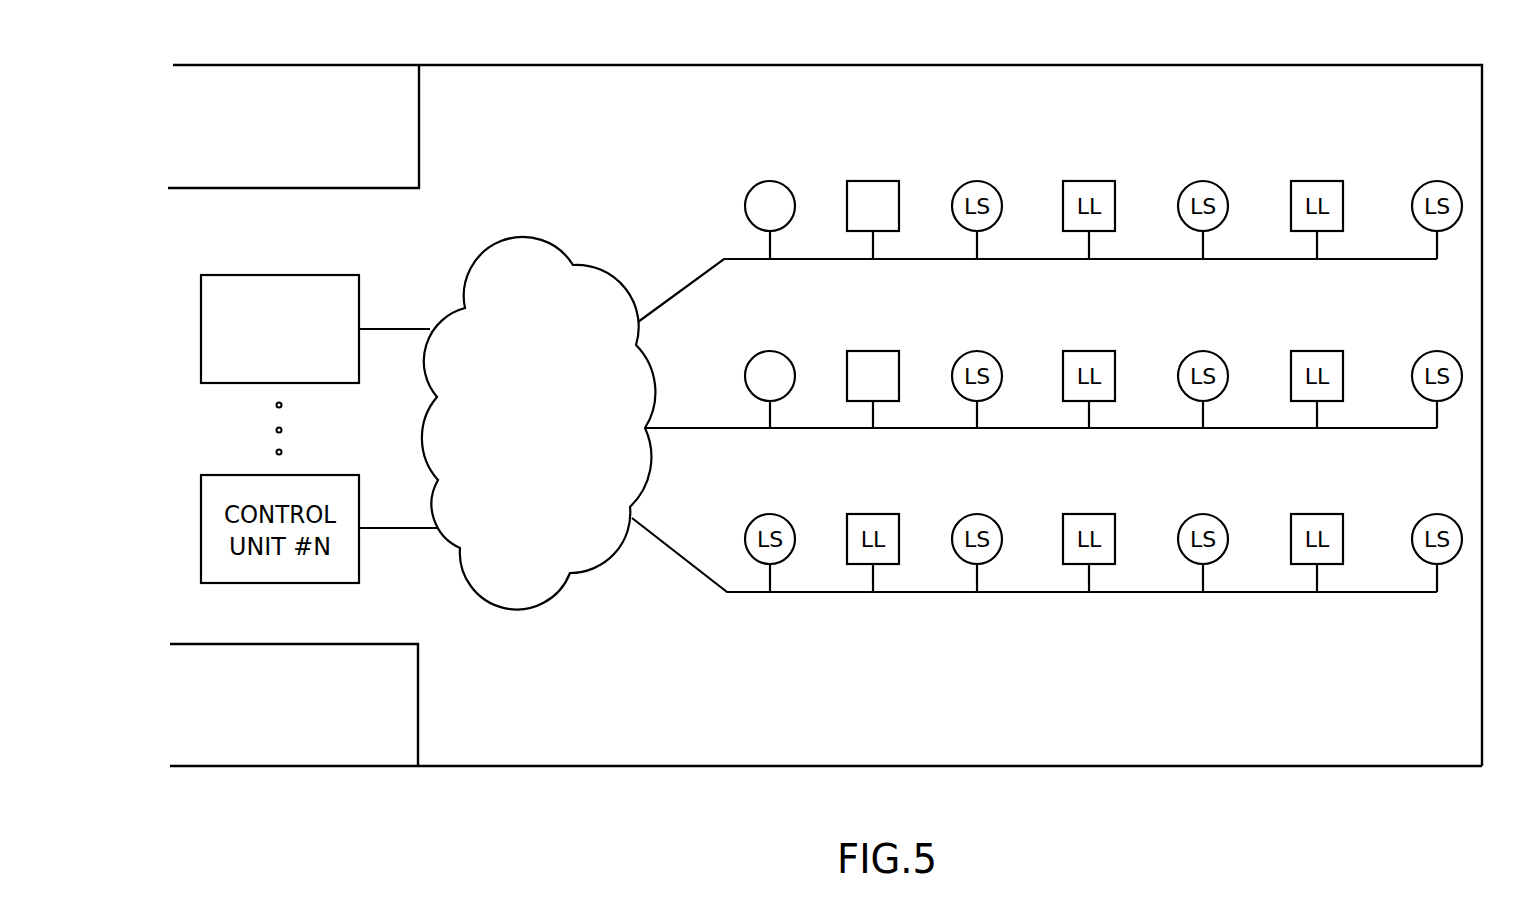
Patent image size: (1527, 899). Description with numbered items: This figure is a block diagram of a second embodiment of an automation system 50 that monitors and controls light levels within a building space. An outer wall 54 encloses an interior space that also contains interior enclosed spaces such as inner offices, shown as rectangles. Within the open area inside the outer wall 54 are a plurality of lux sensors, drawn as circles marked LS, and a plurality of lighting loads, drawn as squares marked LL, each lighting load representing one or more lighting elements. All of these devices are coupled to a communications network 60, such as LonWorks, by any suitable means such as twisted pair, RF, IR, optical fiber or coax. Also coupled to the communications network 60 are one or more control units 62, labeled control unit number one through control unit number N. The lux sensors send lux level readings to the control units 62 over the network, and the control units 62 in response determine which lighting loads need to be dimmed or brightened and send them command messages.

The automation system 50 is at (440, 792).
The outer wall 54 is at (1312, 65).
The communications network 60 is at (538, 237).
The control unit 62 is at (300, 274).